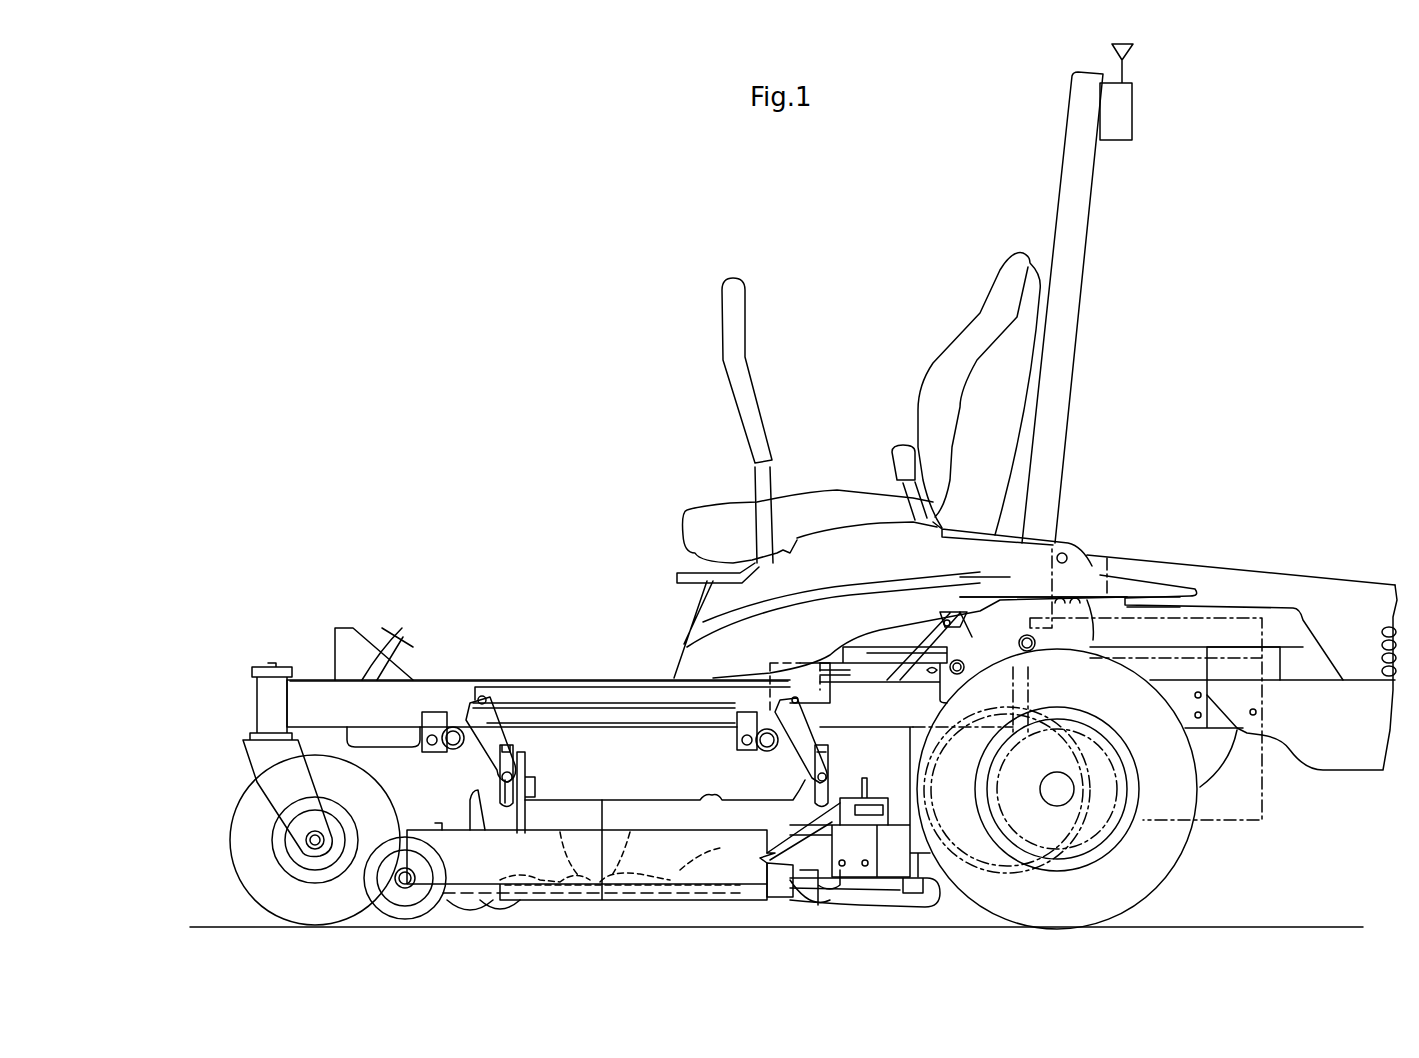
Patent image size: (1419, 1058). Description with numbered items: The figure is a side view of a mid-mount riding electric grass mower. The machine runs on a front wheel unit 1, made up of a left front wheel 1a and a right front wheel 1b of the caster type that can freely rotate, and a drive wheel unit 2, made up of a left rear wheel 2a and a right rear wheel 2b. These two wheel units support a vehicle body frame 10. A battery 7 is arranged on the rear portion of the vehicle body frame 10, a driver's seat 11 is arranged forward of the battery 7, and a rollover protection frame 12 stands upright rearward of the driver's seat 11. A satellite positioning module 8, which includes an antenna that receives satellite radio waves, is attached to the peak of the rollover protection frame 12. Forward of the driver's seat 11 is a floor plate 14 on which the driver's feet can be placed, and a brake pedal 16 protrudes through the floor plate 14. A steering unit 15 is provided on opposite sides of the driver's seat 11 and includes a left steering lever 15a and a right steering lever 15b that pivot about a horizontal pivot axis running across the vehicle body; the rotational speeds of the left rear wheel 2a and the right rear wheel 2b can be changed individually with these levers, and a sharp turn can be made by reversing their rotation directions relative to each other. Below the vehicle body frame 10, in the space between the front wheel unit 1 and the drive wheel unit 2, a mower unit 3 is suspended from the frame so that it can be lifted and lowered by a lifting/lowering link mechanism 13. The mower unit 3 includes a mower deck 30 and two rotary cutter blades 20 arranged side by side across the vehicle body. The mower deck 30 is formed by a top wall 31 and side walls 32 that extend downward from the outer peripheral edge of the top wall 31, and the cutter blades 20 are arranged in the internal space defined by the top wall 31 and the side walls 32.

The front wheel unit 1 is at (237, 848).
The left front wheel 1a is at (266, 794).
The right front wheel 1b is at (266, 794).
The drive wheel unit 2 is at (1182, 842).
The left rear wheel 2a is at (1101, 789).
The right rear wheel 2b is at (1101, 789).
The mower unit 3 is at (602, 860).
The battery 7 is at (1258, 807).
The satellite positioning module 8 is at (1119, 105).
The vehicle body frame 10 is at (304, 674).
The driver's seat 11 is at (933, 367).
The rollover protection frame 12 is at (1090, 185).
The lifting/lowering link mechanism 13 is at (455, 702).
The floor plate 14 is at (557, 680).
The steering unit 15 is at (728, 325).
The left steering lever 15a is at (723, 420).
The right steering lever 15b is at (723, 420).
The brake pedal 16 is at (403, 633).
The rotary cutter blade 20 is at (673, 873).
The mower deck 30 is at (660, 822).
The top wall 31 is at (455, 823).
The side wall 32 is at (740, 888).